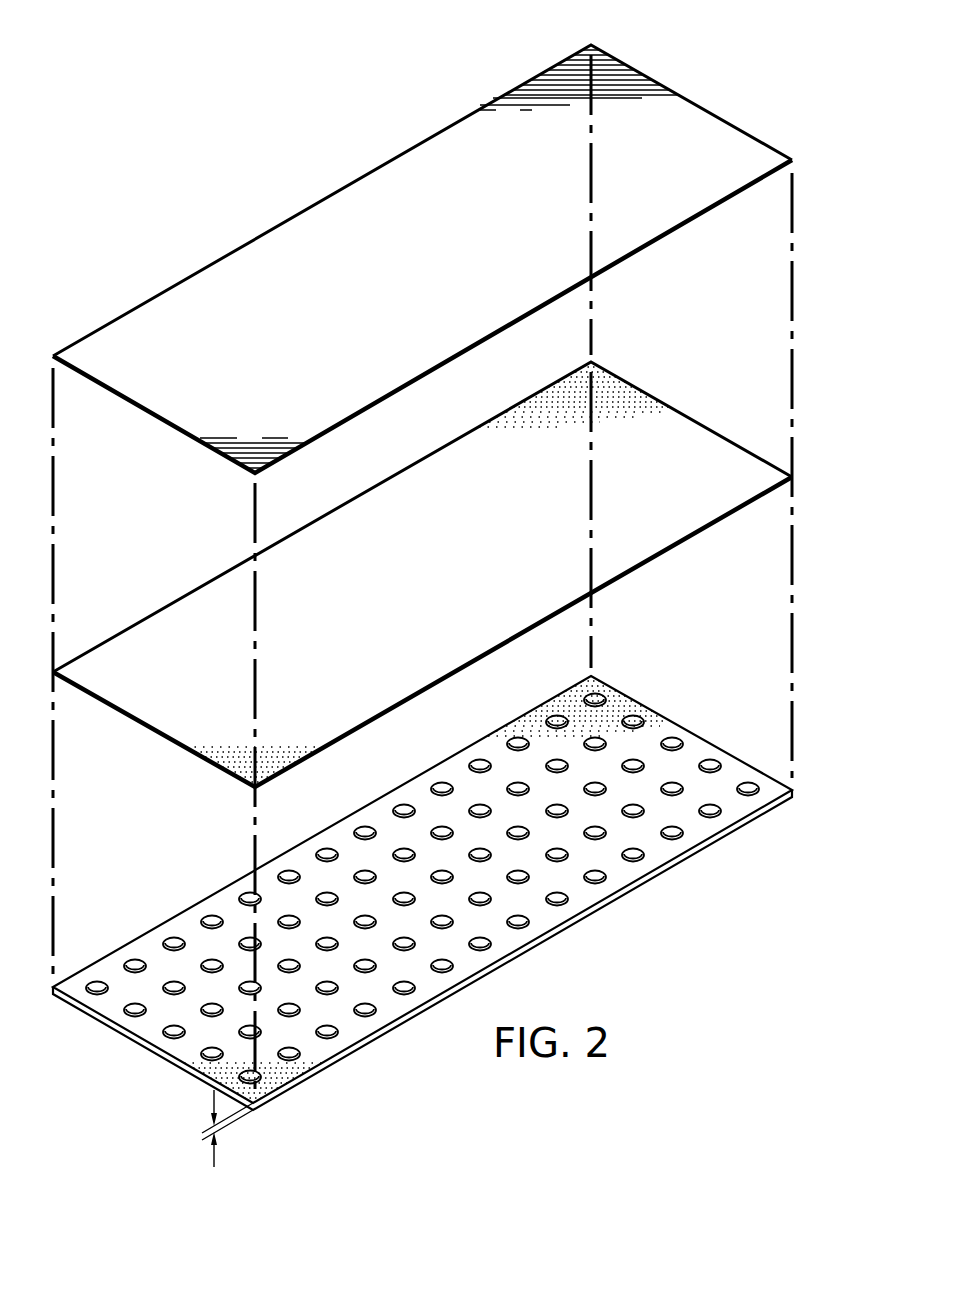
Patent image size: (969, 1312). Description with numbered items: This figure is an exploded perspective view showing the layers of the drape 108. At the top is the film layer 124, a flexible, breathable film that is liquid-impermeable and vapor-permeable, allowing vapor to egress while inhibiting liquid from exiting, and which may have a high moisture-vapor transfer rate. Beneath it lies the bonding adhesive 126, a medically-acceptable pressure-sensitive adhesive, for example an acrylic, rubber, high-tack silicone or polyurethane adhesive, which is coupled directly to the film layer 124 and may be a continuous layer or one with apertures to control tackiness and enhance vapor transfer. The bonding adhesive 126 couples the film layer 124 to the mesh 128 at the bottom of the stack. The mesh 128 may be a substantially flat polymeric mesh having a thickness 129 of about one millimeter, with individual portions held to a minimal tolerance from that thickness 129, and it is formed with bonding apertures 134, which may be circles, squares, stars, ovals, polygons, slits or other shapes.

The drape 108 is at (298, 119).
The film layer 124 is at (290, 228).
The bonding adhesive 126 is at (376, 493).
The mesh 128 is at (340, 830).
The thickness 129 is at (214, 1158).
The bonding apertures 134 is at (482, 760).